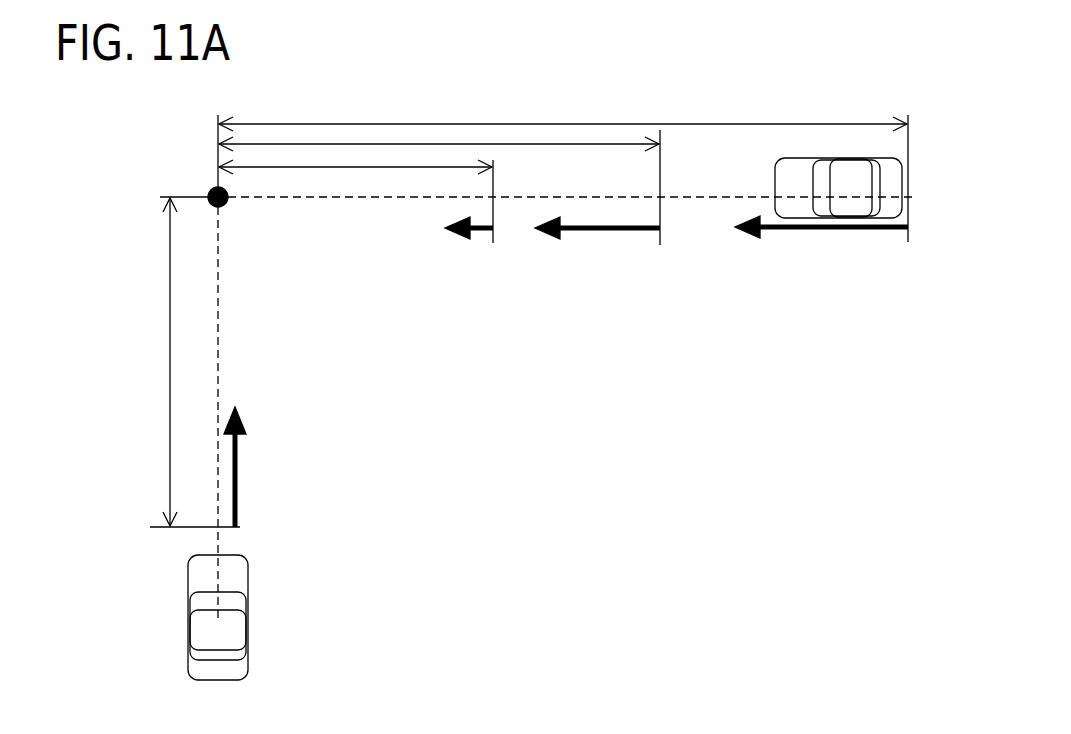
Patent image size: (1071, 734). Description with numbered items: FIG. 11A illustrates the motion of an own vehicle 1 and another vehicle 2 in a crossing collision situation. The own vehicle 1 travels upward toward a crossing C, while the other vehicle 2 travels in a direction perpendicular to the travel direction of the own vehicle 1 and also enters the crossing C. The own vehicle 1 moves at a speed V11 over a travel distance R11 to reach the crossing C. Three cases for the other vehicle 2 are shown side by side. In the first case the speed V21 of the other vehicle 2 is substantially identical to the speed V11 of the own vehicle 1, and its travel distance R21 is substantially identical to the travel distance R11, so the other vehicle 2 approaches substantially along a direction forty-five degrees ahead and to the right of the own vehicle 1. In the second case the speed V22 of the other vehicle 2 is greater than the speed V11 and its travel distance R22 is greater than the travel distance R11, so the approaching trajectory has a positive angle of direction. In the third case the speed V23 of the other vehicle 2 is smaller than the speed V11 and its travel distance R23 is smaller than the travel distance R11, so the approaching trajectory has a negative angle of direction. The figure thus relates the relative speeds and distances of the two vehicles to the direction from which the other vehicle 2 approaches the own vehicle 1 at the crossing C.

The own vehicle 1 is at (248, 632).
The other vehicle 2 is at (774, 178).
The crossing C is at (224, 206).
The travel distance of the own vehicle R11 is at (150, 362).
The travel distance of the other vehicle R21 is at (439, 157).
The travel distance of the other vehicle R22 is at (563, 133).
The travel distance of the other vehicle R23 is at (355, 176).
The speed of the own vehicle V11 is at (255, 467).
The speed of the other vehicle V21 is at (597, 243).
The speed of the other vehicle V22 is at (821, 242).
The speed of the other vehicle V23 is at (469, 243).